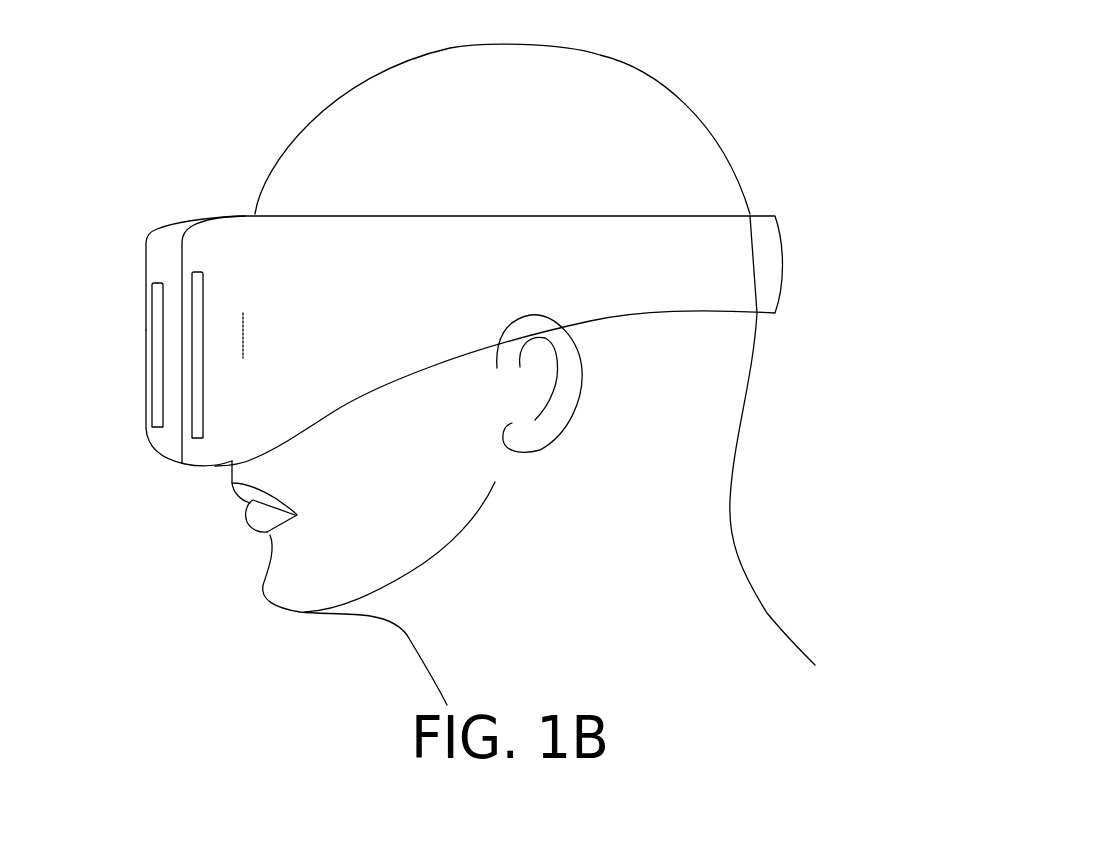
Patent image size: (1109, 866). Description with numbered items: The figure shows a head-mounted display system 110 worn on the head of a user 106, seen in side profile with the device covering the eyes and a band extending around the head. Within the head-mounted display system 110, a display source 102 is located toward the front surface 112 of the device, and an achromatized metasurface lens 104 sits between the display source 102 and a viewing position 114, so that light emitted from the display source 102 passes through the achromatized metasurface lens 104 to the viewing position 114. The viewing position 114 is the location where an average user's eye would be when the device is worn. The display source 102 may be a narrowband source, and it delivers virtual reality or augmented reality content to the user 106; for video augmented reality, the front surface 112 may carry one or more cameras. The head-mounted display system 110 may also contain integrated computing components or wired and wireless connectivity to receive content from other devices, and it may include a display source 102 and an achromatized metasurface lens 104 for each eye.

The display source 102 is at (157, 427).
The achromatized metasurface lens 104 is at (203, 440).
The user 106 is at (672, 95).
The head-mounted display system 110 is at (155, 232).
The front surface 112 is at (138, 347).
The viewing position 114 is at (243, 313).